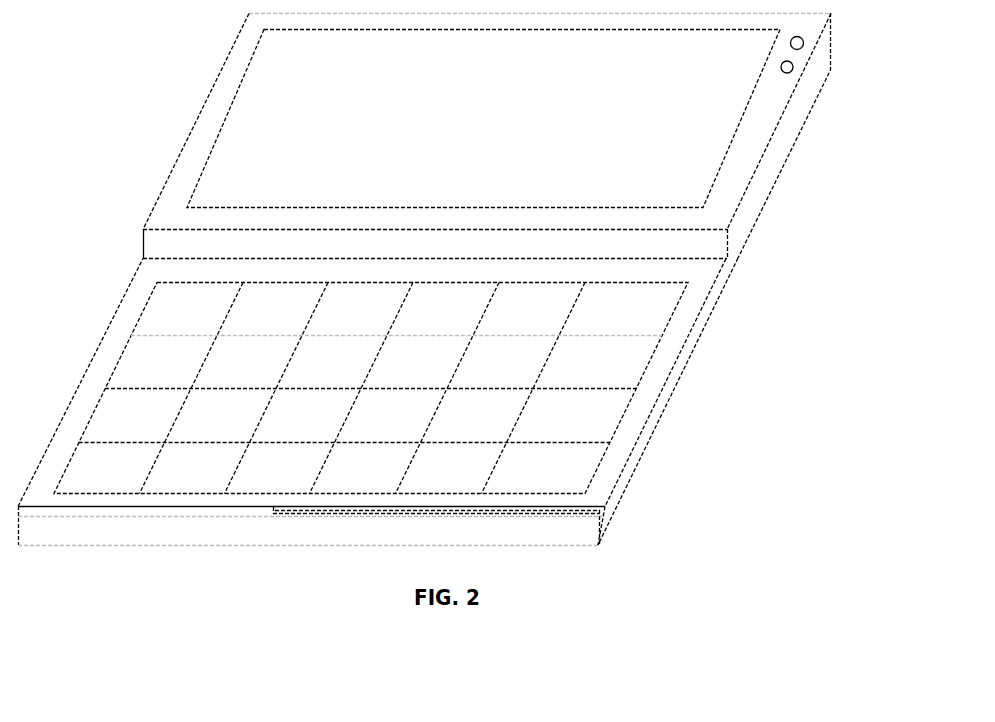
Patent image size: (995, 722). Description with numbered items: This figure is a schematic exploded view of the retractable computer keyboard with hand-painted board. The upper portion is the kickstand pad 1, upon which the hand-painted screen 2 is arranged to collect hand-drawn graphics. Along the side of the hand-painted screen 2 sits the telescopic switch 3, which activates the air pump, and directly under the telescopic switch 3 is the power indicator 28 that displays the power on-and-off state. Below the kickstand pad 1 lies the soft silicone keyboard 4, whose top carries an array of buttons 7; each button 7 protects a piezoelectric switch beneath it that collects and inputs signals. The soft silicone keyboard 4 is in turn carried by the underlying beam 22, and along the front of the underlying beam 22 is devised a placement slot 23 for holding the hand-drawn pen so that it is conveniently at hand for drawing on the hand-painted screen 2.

The kickstand pad 1 is at (753, 143).
The hand-painted screen 2 is at (688, 168).
The telescopic switch 3 is at (803, 45).
The power indicator 28 is at (787, 67).
The soft silicone keyboard 4 is at (673, 269).
The button 7 is at (628, 311).
The underlying beam 22 is at (582, 535).
The placement slot 23 is at (570, 513).